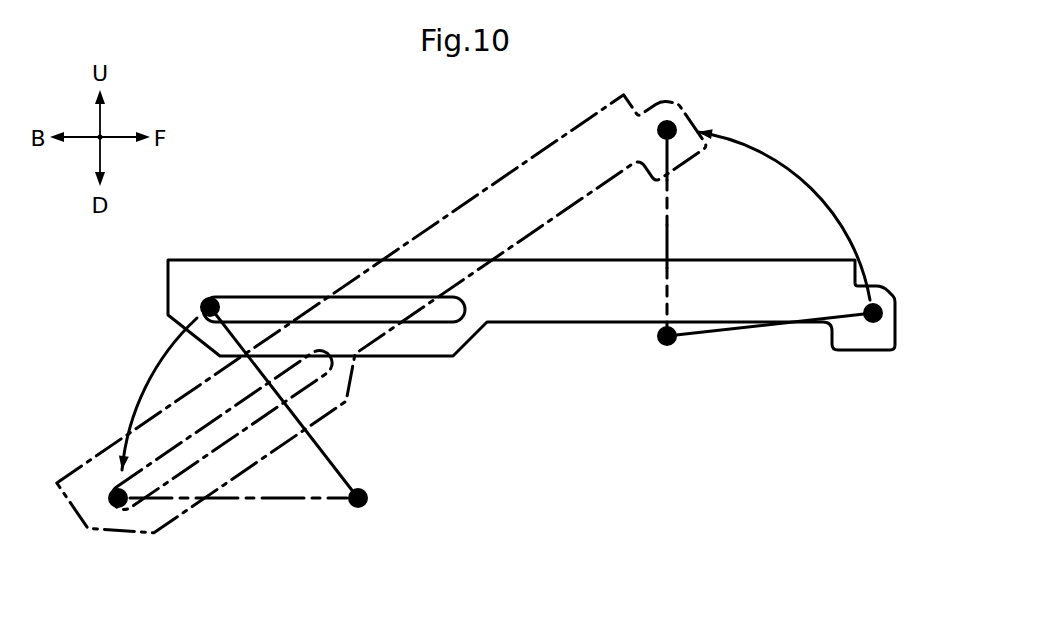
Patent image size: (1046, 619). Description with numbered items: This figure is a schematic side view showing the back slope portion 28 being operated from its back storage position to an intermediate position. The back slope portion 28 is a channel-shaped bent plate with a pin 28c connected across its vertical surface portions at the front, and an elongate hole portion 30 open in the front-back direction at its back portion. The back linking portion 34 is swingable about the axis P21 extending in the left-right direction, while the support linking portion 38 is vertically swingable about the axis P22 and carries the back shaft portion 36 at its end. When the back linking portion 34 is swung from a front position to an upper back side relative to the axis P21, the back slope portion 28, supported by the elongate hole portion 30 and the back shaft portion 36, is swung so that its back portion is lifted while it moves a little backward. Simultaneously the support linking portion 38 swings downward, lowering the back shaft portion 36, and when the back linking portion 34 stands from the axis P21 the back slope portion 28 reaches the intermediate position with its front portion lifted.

The back slope portion 28 is at (304, 260).
The pin 28c is at (872, 326).
The elongate hole portion 30 is at (272, 302).
The back linking portion 34 is at (721, 333).
The back shaft portion 36 is at (203, 304).
The support linking portion 38 is at (330, 457).
The axis P21 is at (668, 346).
The axis P22 is at (368, 500).